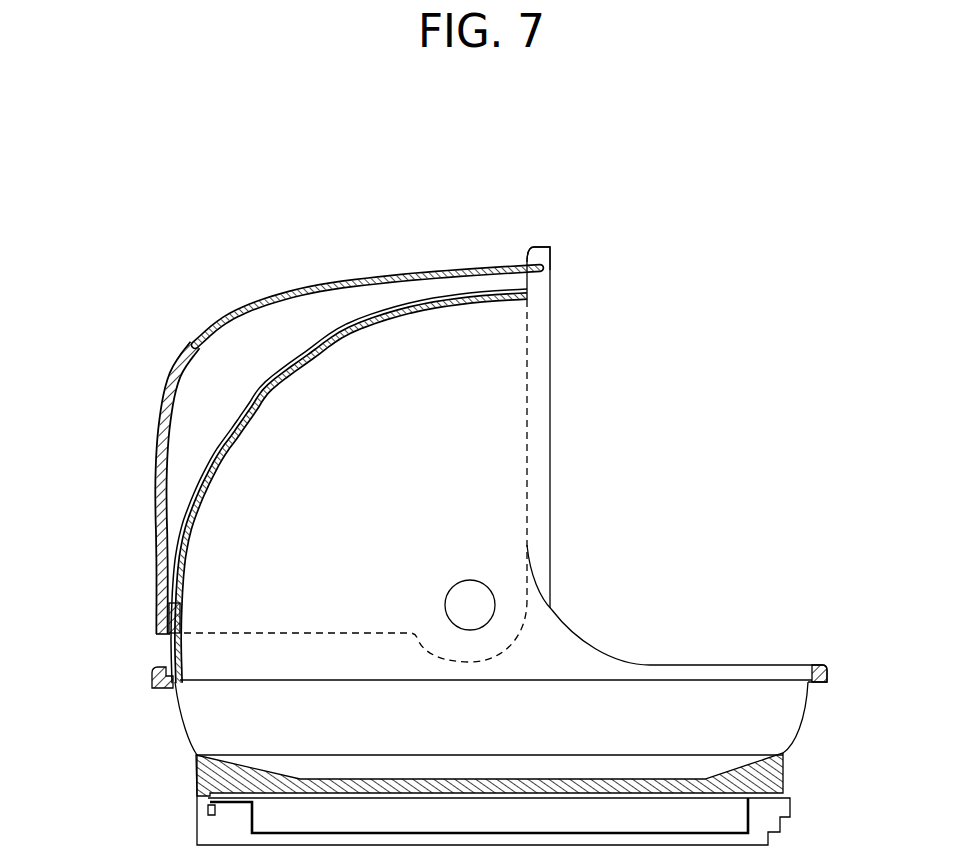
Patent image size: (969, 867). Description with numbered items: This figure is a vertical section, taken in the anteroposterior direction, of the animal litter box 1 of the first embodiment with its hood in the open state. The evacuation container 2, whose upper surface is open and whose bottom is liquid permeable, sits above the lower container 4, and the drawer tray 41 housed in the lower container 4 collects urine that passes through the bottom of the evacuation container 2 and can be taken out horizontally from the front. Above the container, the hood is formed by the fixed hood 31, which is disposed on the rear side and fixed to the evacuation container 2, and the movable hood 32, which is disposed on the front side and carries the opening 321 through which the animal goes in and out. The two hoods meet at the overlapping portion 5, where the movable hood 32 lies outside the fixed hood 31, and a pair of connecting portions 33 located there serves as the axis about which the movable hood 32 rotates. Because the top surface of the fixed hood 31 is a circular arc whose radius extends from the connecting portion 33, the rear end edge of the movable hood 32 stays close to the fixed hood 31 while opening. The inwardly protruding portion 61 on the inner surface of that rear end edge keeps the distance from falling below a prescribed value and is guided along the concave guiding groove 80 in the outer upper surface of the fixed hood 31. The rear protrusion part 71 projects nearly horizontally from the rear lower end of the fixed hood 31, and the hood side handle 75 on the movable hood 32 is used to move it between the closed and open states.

The animal litter box 1 is at (240, 240).
The evacuation container 2 is at (205, 723).
The lower container 4 is at (786, 768).
The overlapping portion 5 is at (500, 433).
The fixed hood 31 is at (212, 455).
The movable hood 32 is at (168, 380).
The connecting portion 33 is at (462, 600).
The drawer tray 41 is at (777, 818).
The inwardly protruding portion 61 is at (158, 616).
The rear protrusion part 71 is at (162, 667).
The hood side handle 75 is at (535, 246).
The guiding groove 80 is at (355, 312).
The opening 321 is at (417, 276).